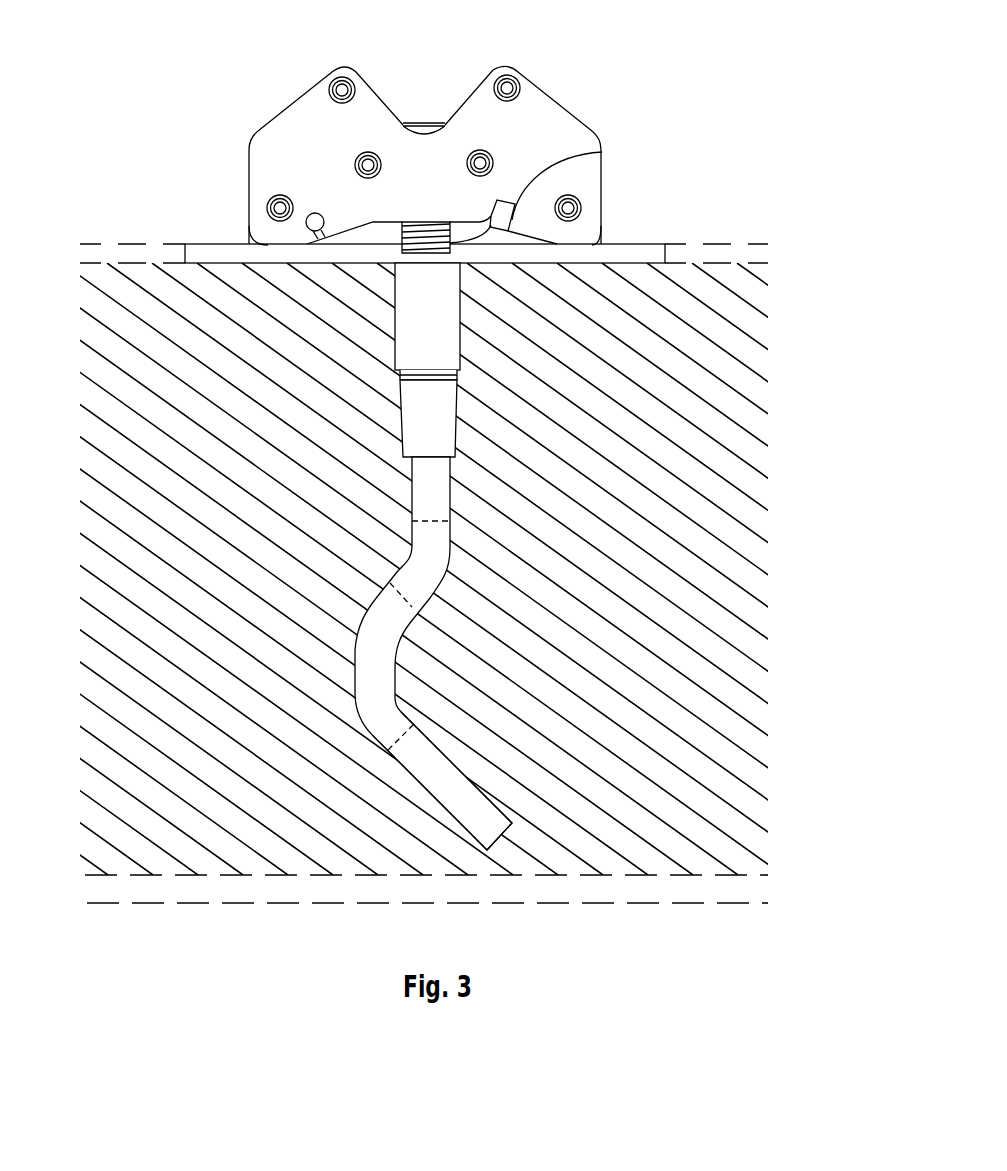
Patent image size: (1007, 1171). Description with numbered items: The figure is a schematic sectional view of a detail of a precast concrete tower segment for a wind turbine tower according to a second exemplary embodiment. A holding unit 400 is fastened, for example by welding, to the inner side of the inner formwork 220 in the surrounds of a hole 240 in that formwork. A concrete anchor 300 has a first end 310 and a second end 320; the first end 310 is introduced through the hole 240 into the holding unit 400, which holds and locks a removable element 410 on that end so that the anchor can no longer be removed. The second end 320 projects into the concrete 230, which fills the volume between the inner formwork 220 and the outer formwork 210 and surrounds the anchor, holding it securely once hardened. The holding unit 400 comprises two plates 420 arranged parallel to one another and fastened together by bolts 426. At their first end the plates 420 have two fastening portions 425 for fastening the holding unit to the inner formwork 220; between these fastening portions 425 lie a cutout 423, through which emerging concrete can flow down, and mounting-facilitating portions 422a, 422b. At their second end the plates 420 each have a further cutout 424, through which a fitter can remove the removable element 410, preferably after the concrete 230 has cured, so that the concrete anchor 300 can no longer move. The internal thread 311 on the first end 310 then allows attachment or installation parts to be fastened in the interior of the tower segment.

The outer formwork 210 is at (533, 897).
The inner formwork 220 is at (487, 262).
The concrete 230 is at (540, 606).
The hole 240 is at (418, 257).
The concrete anchor 300 is at (401, 567).
The first end 310 is at (450, 340).
The internal thread 311 is at (410, 293).
The second end 320 is at (460, 783).
The holding unit 400 is at (570, 103).
The removable element 410 is at (602, 157).
The plates 420 is at (541, 162).
The mounting-facilitating portion 422a is at (489, 207).
The mounting-facilitating portion 422b is at (307, 209).
The cutout 423 is at (378, 222).
The cutout 424 is at (380, 92).
The fastening portions 425 is at (249, 226).
The bolts 426 is at (512, 70).